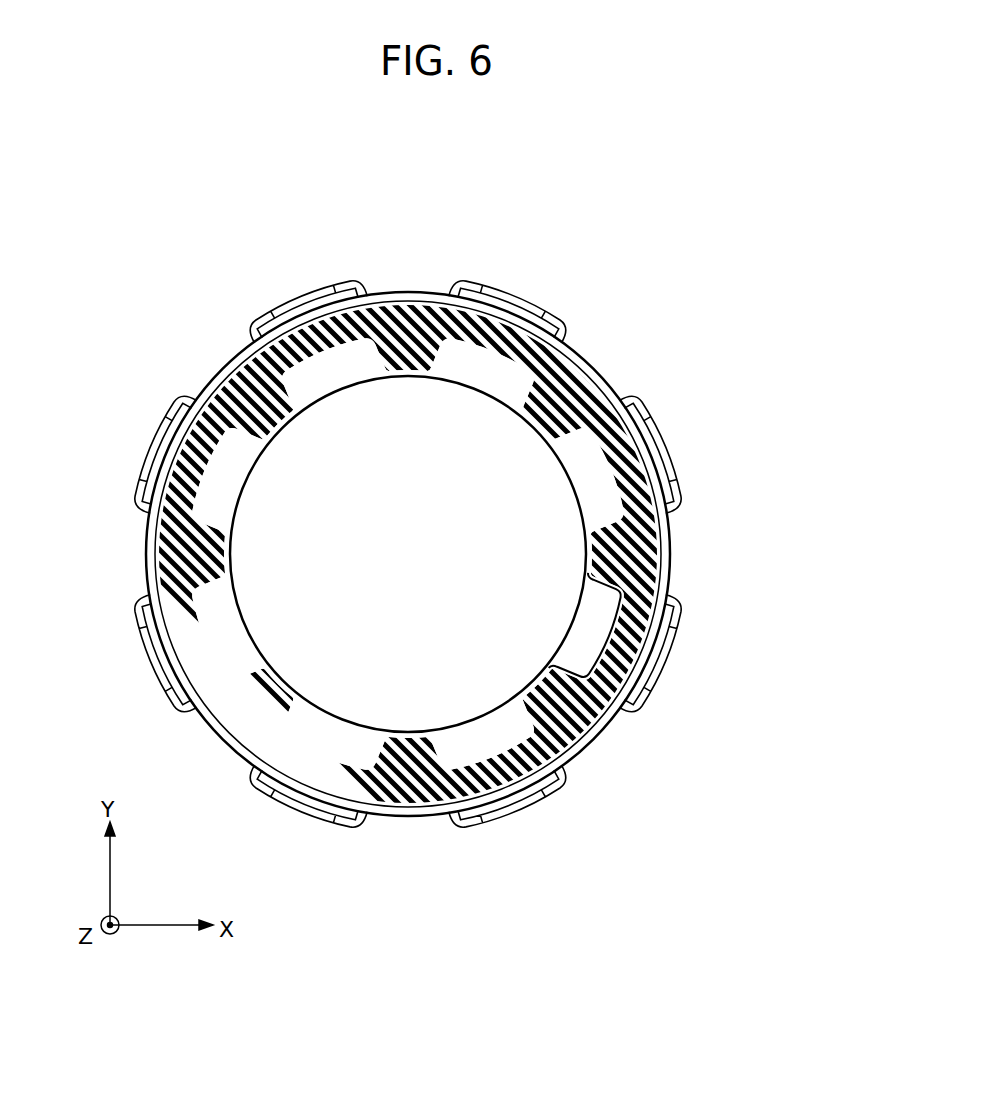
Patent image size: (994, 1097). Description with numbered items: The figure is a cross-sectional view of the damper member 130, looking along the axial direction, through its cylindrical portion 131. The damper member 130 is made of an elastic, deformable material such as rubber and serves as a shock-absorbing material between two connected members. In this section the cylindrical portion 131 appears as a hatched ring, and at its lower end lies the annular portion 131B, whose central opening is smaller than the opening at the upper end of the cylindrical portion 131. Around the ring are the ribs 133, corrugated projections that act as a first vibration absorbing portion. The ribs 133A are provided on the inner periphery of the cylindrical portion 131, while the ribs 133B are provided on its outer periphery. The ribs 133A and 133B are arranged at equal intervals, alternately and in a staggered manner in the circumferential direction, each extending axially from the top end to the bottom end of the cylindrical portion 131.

The damper member 130 is at (695, 131).
The cylindrical portion 131 is at (588, 360).
The annular portion 131B is at (590, 628).
The ribs 133 is at (456, 554).
The ribs 133A is at (240, 552).
The ribs 133B is at (667, 437).